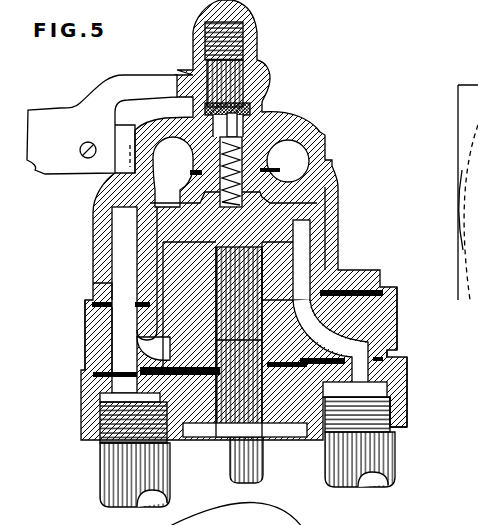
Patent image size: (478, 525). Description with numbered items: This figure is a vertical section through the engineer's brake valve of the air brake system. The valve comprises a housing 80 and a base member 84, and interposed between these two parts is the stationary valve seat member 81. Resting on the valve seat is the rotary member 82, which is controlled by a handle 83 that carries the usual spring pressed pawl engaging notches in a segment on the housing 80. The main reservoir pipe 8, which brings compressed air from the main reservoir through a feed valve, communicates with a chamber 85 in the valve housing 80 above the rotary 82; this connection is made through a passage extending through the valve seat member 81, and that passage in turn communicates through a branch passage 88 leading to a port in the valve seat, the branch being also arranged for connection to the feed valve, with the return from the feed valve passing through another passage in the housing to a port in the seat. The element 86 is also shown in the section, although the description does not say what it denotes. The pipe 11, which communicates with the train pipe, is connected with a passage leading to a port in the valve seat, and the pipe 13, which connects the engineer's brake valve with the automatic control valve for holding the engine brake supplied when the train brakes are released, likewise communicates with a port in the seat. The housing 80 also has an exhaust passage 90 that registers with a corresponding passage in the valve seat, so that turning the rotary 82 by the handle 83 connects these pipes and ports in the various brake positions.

The main reservoir pipe 8 is at (102, 472).
The pipe 11 is at (392, 452).
The pipe 13 is at (233, 463).
The housing 80 is at (339, 190).
The stationary valve seat member 81 is at (280, 277).
The rotary member 82 is at (279, 208).
The handle 83 is at (133, 75).
The base member 84 is at (408, 393).
The chamber 85 is at (190, 176).
The left flange 86 is at (123, 326).
The branch passage 88 is at (152, 268).
The exhaust passage 90 is at (243, 328).